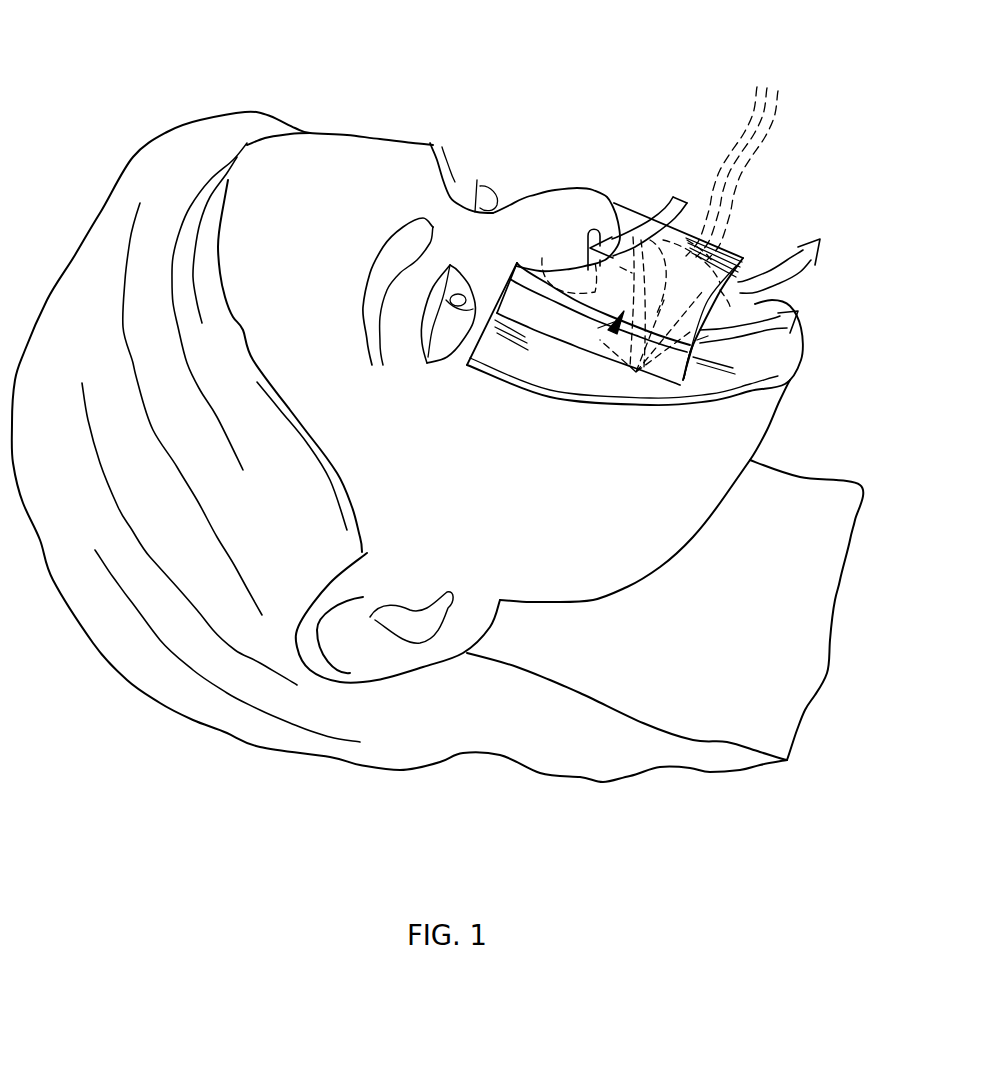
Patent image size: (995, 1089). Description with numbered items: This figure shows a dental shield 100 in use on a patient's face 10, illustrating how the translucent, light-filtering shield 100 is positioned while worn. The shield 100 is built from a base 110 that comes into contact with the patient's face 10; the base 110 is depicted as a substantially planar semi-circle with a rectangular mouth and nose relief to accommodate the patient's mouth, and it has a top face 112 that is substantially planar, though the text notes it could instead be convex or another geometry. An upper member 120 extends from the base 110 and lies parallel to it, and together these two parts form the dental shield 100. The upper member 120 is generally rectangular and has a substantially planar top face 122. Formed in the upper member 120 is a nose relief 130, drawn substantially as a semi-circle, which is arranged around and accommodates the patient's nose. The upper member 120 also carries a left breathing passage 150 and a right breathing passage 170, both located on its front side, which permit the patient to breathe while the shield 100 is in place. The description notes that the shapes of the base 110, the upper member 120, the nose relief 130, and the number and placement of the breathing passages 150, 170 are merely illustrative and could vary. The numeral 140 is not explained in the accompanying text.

The patient's face 10 is at (425, 127).
The dental shield 100 is at (678, 277).
The base 110 is at (555, 381).
The top face of base 112 is at (557, 395).
The upper member 120 is at (607, 337).
The top face of upper member 122 is at (630, 301).
The nose relief 130 is at (609, 245).
The hinge 140 is at (598, 328).
The left breathing passage 150 is at (697, 340).
The right breathing passage 170 is at (745, 282).